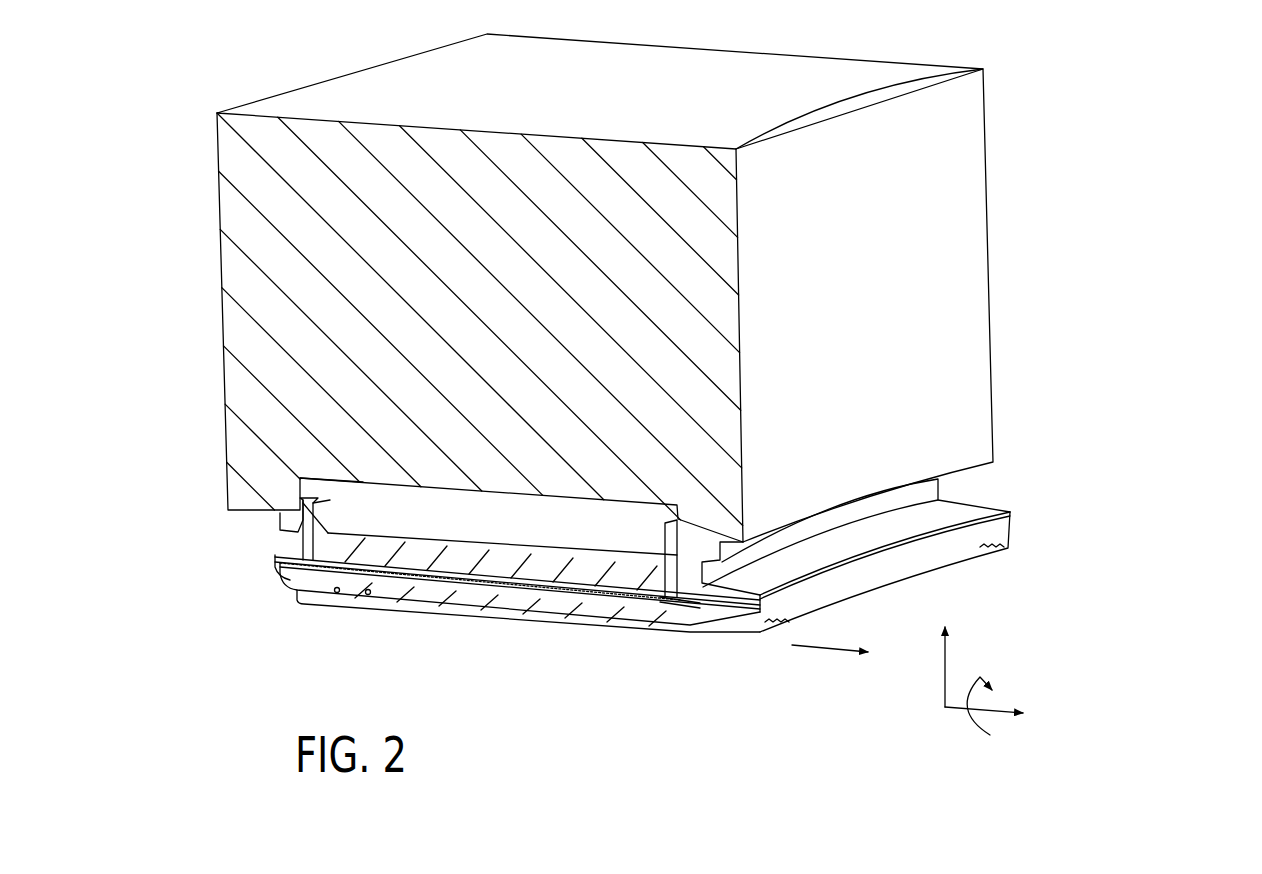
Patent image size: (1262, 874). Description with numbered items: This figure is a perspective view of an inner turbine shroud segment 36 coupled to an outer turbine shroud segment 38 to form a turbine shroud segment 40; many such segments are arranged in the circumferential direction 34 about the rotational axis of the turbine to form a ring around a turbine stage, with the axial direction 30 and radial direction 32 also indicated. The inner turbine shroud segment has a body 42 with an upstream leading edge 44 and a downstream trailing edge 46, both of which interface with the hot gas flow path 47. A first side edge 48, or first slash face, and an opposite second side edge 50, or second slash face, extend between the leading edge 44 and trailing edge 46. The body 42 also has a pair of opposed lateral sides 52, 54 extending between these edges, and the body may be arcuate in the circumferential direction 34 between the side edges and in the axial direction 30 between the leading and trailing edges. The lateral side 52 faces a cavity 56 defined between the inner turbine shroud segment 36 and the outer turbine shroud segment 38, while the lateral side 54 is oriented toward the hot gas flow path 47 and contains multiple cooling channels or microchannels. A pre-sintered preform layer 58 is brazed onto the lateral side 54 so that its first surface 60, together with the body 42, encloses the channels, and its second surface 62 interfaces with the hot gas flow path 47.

The axial direction 30 is at (960, 708).
The radial direction 32 is at (945, 670).
The circumferential direction 34 is at (980, 677).
The inner turbine shroud segment 36 is at (1008, 545).
The outer turbine shroud segment 38 is at (985, 115).
The turbine shroud segment 40 is at (1103, 208).
The body 42 is at (493, 568).
The leading edge 44 is at (297, 577).
The trailing edge 46 is at (947, 545).
The hot gas flow path 47 is at (823, 652).
The first side edge 48 is at (630, 610).
The second side edge 50 is at (1010, 515).
The lateral side 52 is at (592, 530).
The lateral side 54 is at (655, 600).
The cavity 56 is at (557, 523).
The pre-sintered preform layer 58 is at (573, 620).
The first surface 60 is at (417, 602).
The second surface 62 is at (380, 597).